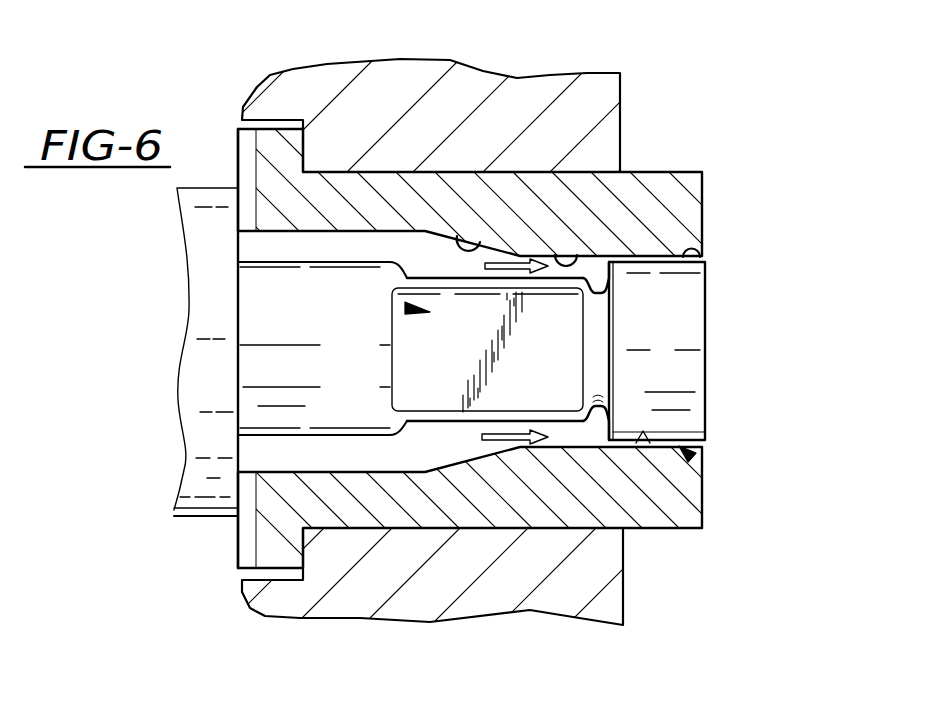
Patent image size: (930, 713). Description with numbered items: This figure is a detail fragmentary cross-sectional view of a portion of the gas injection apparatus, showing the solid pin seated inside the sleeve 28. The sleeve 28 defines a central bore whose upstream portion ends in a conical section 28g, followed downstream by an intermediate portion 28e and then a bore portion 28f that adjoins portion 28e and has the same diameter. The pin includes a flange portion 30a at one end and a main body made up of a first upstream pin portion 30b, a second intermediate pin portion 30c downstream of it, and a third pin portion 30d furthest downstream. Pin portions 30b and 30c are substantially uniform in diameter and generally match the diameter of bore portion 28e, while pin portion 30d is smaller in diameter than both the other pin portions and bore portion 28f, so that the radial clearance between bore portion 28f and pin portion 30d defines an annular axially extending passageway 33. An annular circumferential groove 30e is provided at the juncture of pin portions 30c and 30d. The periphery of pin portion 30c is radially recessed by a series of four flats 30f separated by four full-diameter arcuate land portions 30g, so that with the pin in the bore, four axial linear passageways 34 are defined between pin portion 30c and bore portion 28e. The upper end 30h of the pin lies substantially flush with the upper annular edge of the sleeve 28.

The sleeve 28 is at (650, 172).
The intermediate portion 28e is at (600, 250).
The bore portion 28f is at (645, 443).
The conical section 28g is at (480, 240).
The flange portion 30a is at (200, 307).
The first upstream pin portion 30b is at (248, 363).
The second intermediate pin portion 30c is at (405, 307).
The third pin portion 30d is at (686, 256).
The annular circumferential groove 30e is at (614, 255).
The flats 30f is at (463, 364).
The arcuate land portions 30g is at (438, 280).
The upper end 30h is at (700, 318).
The annular axially extending passageway 33 is at (690, 458).
The axial linear passageways 34 is at (500, 445).